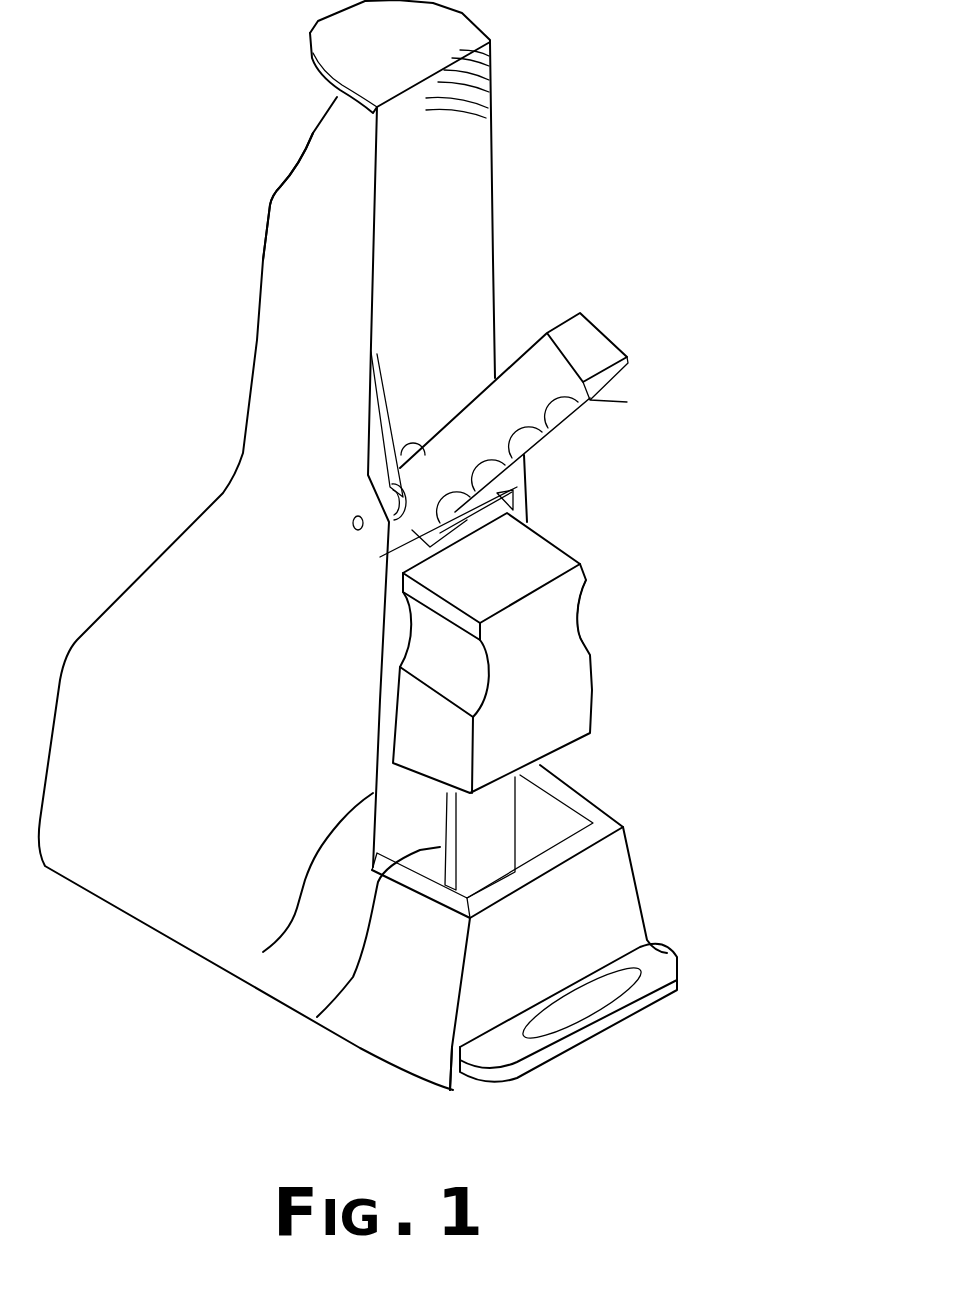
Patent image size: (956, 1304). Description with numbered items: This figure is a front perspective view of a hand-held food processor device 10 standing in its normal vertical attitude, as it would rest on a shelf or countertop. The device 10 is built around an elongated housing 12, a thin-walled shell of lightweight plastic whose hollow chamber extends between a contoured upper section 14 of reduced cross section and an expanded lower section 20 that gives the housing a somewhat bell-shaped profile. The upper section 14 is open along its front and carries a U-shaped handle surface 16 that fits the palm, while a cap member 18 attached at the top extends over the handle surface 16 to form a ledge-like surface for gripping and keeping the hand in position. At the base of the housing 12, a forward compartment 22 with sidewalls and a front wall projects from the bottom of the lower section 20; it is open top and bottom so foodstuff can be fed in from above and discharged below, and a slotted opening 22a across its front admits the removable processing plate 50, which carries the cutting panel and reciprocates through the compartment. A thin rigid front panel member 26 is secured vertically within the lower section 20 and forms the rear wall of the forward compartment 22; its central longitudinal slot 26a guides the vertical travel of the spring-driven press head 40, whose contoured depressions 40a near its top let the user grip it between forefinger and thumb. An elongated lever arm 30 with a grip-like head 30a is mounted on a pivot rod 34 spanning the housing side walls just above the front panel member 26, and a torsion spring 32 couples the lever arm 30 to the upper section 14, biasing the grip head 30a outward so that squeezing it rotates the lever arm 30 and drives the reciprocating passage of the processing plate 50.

The food processor device 10 is at (603, 463).
The housing 12 is at (243, 455).
The upper section 14 is at (493, 175).
The handle surface 16 is at (270, 205).
The cap member 18 is at (311, 50).
The lower section 20 is at (583, 780).
The forward compartment 22 is at (623, 826).
The slotted opening 22a is at (459, 1088).
The front panel member 26 is at (263, 952).
The slot 26a is at (317, 1017).
The lever arm 30 is at (608, 328).
The grip head 30a is at (627, 402).
The torsion spring 32 is at (415, 436).
The pivot rod 34 is at (353, 527).
The press head 40 is at (582, 563).
The contoured depressions 40a is at (585, 643).
The processing plate member 50 is at (677, 957).